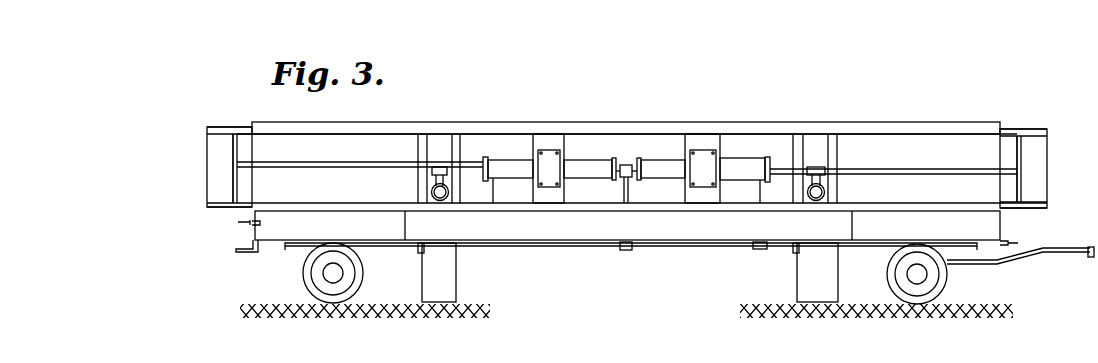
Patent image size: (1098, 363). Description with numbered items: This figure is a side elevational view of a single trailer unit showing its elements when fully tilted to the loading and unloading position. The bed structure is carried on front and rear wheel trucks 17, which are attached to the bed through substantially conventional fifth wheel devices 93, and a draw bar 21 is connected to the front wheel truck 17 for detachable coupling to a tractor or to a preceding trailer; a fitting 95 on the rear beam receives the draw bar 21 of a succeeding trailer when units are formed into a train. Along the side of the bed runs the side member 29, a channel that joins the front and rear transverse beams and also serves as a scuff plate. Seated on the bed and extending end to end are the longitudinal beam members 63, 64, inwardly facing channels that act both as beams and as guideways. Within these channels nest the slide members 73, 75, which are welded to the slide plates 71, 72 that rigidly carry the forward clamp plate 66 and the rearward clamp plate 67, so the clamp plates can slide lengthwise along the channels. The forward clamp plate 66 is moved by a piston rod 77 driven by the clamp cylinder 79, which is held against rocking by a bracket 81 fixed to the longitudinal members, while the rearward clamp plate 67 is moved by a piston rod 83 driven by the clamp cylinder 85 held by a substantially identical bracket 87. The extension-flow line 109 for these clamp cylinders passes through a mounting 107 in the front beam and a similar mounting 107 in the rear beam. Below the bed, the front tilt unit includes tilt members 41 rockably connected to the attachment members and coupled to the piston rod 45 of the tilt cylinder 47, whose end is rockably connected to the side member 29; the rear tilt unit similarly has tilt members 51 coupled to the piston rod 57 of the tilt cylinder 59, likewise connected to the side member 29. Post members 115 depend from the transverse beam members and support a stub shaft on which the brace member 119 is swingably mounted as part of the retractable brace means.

The wheel truck 17 is at (352, 278).
The draw bar 21 is at (1047, 252).
The side member 29 is at (706, 235).
The tilt member 41 is at (835, 150).
The piston rod 45 is at (826, 184).
The tilt cylinder 47 is at (826, 193).
The tilt member 51 is at (455, 160).
The piston rod 57 is at (431, 189).
The tilt cylinder 59 is at (449, 195).
The longitudinal beam member 63 is at (624, 207).
The longitudinal beam member 64 is at (617, 127).
The forward clamp plate 66 is at (1013, 155).
The rearward clamp plate 67 is at (235, 147).
The slide plate 71 is at (1040, 185).
The slide plate 72 is at (215, 181).
The slide member 73 is at (234, 205).
The slide member 75 is at (218, 128).
The piston rod 77 is at (952, 170).
The clamp cylinder 79 is at (739, 165).
The bracket 81 is at (693, 142).
The piston rod 83 is at (364, 168).
The clamp cylinder 85 is at (494, 164).
The bracket 87 is at (546, 142).
The fifth wheel device 93 is at (322, 243).
The fitting 95 is at (253, 253).
The mounting 107 is at (256, 223).
The extension-flow line 109 is at (655, 247).
The post member 115 is at (456, 251).
The brace member 119 is at (453, 285).